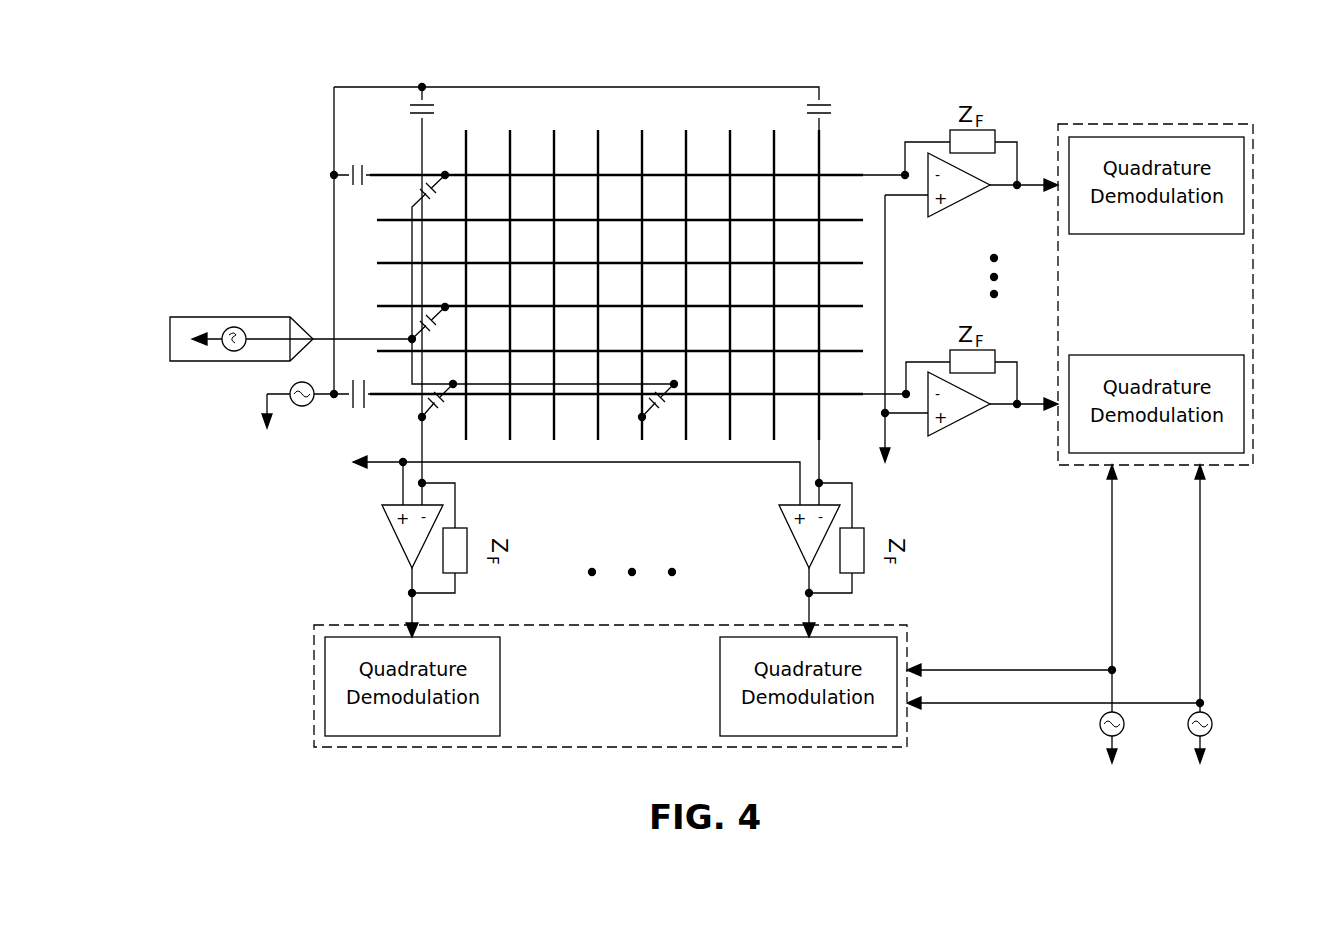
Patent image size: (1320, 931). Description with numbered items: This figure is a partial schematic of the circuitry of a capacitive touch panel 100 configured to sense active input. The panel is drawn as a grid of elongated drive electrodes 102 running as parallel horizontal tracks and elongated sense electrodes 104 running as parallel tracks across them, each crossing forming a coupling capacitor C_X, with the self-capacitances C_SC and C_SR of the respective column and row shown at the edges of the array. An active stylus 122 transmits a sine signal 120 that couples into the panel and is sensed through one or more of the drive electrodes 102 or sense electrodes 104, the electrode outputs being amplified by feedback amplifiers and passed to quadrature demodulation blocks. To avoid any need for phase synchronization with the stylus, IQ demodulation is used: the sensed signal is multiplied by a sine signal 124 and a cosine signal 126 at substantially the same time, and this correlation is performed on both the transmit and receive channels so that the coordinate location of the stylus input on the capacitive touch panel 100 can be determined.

The capacitive touch panel 100 is at (891, 77).
The drive electrode 102 is at (463, 240).
The sense electrode 104 is at (532, 173).
The sine signal 120 is at (234, 352).
The active stylus 122 is at (186, 368).
The sine signal 124 is at (1100, 724).
The cosine signal 126 is at (1212, 724).